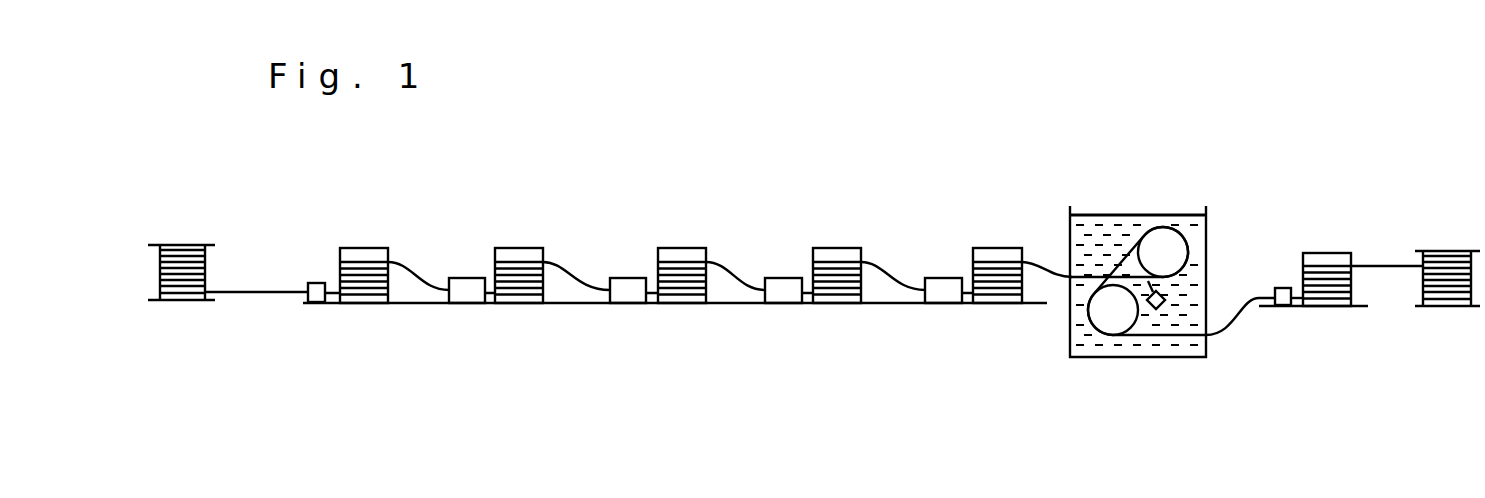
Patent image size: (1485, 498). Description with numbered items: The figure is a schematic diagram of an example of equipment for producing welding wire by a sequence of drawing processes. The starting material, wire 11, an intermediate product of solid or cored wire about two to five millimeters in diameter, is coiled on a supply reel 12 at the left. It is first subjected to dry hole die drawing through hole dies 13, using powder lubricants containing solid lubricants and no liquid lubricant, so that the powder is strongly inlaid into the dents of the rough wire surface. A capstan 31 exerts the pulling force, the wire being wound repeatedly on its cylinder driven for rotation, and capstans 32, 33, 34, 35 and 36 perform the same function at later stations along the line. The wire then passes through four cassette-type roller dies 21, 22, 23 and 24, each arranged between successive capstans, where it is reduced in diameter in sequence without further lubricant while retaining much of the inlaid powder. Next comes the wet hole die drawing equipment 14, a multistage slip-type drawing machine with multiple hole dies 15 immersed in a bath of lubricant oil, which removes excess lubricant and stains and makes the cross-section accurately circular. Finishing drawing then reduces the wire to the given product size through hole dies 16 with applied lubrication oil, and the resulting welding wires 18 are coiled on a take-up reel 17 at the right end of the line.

The wire 11 is at (257, 295).
The supply reel 12 is at (181, 247).
The hole dies 13 is at (320, 282).
The wet hole die drawing equipment 14 is at (1179, 188).
The hole dies 15 is at (1163, 308).
The hole dies 16 is at (1285, 288).
The take-up reel 17 is at (1450, 251).
The welding wires 18 is at (1390, 268).
The cassette-type roller dies 21 is at (468, 277).
The cassette-type roller dies 22 is at (632, 278).
The cassette-type roller dies 23 is at (785, 278).
The cassette-type roller dies 24 is at (943, 278).
The capstan 31 is at (365, 250).
The capstan 32 is at (522, 252).
The capstan 33 is at (685, 252).
The capstan 34 is at (845, 252).
The capstan 35 is at (1002, 252).
The capstan 36 is at (1327, 256).